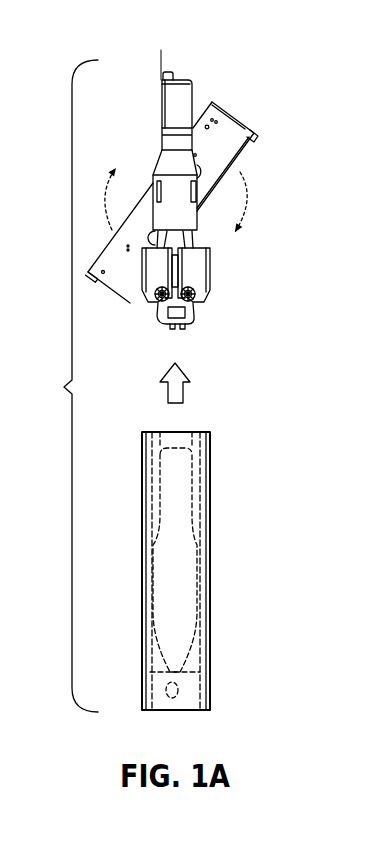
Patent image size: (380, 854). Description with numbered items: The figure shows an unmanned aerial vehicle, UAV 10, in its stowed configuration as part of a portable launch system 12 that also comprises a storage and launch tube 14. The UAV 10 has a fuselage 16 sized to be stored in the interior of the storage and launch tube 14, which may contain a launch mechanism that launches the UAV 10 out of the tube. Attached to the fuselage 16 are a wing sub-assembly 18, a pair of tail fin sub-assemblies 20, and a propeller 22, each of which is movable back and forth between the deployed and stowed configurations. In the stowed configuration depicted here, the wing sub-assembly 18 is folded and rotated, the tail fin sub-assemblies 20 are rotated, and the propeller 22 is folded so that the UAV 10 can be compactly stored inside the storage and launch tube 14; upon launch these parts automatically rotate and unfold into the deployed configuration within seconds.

The unmanned aerial vehicle 10 is at (264, 95).
The portable launch system 12 is at (69, 386).
The storage and launch tube 14 is at (208, 568).
The fuselage 16 is at (195, 88).
The wing sub-assembly 18 is at (232, 140).
The tail fin sub-assemblies 20 is at (207, 272).
The propeller 22 is at (192, 316).